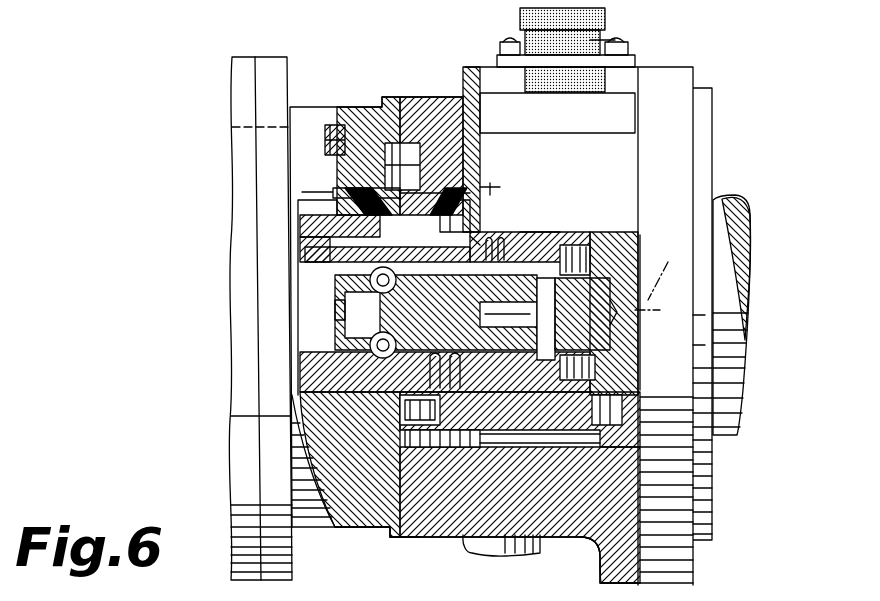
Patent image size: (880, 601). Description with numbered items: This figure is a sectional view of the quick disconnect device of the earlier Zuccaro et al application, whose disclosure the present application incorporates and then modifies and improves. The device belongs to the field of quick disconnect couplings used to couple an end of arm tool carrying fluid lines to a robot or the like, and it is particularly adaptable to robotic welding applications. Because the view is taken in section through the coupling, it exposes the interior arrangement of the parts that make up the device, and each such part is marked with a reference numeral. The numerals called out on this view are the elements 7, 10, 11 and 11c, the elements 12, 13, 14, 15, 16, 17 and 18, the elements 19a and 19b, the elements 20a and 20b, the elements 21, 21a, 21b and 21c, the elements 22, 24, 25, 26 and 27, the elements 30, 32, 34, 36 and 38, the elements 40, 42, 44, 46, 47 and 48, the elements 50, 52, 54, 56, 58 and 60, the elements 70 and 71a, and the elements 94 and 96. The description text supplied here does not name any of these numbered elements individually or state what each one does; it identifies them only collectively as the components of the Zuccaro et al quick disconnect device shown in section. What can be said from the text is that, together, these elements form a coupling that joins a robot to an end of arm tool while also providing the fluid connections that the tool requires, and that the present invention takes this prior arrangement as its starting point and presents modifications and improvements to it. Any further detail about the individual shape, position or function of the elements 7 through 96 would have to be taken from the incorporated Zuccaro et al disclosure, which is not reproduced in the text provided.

The mounting plate 7 is at (237, 66).
The housing 10 is at (716, 88).
The housing body 11 is at (296, 105).
The housing top portion 11c is at (612, 48).
The body portion 12 is at (598, 566).
The lower wall 13 is at (320, 355).
The gear tooth sector 14 is at (718, 194).
The upper wall 15 is at (310, 275).
The tab 16 is at (505, 548).
The piston 17 is at (445, 300).
The gear 18 is at (685, 545).
The pin 19a is at (315, 190).
The pin 19b is at (478, 186).
The bottom surface 20a is at (365, 527).
The bottom step 20b is at (395, 537).
The block 21 is at (471, 149).
The seal 21a is at (368, 165).
The seal 21b is at (442, 170).
The adjustment assembly 21c is at (520, 24).
The lower body 22 is at (475, 478).
The body 24 is at (400, 470).
The step 25 is at (415, 530).
The cavity 26 is at (532, 234).
The bolt 27 is at (405, 424).
The rod 30 is at (640, 312).
The ball 32 is at (335, 282).
The block 34 is at (640, 240).
The bolt 36 is at (595, 426).
The threaded member 38 is at (478, 442).
The piston head 40 is at (335, 330).
The block 42 is at (592, 245).
The spring 44 is at (495, 240).
The screw 46 is at (410, 402).
The spring 47 is at (545, 245).
The rod 48 is at (522, 445).
The spring 50 is at (440, 410).
The ball 52 is at (335, 322).
The axis 54 is at (660, 272).
The member 56 is at (444, 214).
The member 58 is at (470, 232).
The block 60 is at (384, 228).
The screw 70 is at (404, 127).
The nut 71a is at (335, 124).
The corner 94 is at (592, 546).
The block 96 is at (596, 362).